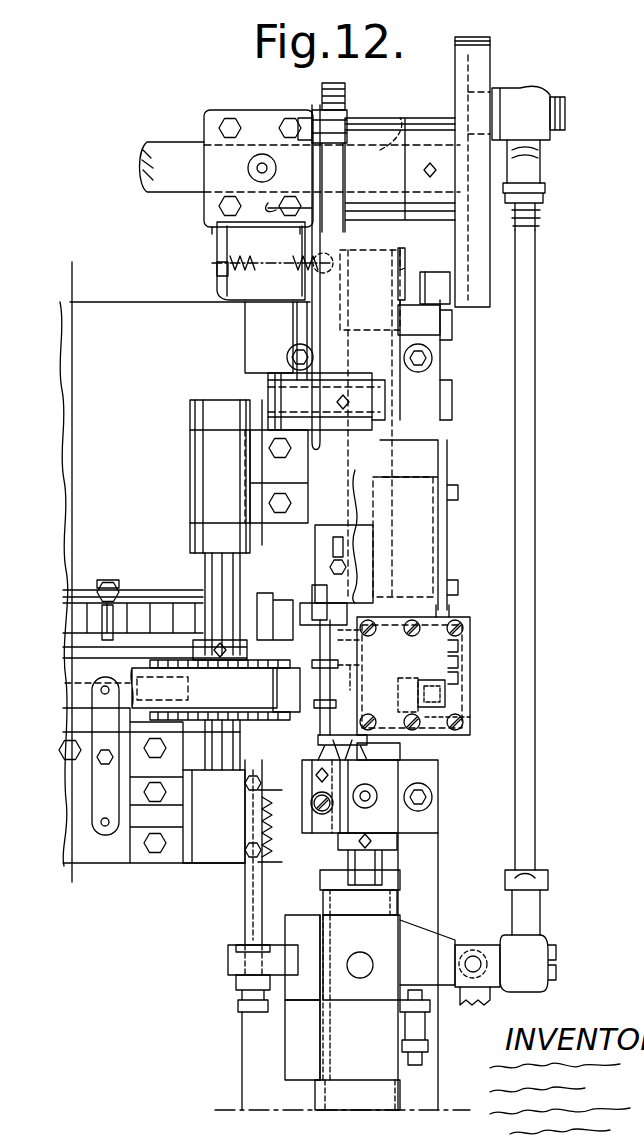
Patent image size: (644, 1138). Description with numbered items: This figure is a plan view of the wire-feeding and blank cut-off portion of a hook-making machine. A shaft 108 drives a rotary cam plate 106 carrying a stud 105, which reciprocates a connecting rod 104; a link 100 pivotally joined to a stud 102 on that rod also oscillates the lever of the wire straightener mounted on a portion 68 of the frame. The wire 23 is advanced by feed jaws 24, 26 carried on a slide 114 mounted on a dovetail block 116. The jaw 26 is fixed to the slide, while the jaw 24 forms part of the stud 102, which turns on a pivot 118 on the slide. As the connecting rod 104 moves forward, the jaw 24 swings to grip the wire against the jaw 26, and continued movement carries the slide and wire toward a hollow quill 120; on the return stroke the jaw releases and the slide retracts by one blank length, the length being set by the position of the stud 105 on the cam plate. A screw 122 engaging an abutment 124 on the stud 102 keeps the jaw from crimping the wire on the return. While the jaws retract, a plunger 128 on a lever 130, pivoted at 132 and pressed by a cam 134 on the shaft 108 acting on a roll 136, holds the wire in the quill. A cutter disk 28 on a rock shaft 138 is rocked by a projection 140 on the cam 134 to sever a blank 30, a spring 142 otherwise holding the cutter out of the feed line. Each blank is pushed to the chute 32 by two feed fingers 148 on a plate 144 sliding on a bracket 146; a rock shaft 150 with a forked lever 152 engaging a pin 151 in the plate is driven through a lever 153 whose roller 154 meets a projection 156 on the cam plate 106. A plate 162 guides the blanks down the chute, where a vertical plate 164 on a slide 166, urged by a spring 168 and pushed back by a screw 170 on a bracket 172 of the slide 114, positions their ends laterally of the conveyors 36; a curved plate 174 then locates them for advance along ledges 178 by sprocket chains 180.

The wire 23 is at (320, 1052).
The feed jaw 24 is at (328, 935).
The feed jaw 26 is at (316, 932).
The cutter disk 28 is at (378, 748).
The blanks 30 is at (257, 620).
The chute 32 is at (310, 645).
The conveyors 36 is at (266, 688).
The frame portion 68 is at (428, 854).
The link 100 is at (490, 998).
The stud 102 is at (496, 950).
The connecting rod 104 is at (520, 664).
The stud 105 is at (564, 112).
The rotary cam plate 106 is at (462, 68).
The shaft 108 is at (178, 152).
The slide 114 is at (296, 1066).
The dovetail block 116 is at (332, 1092).
The pivot 118 is at (360, 965).
The hollow quill 120 is at (320, 872).
The screw 122 is at (422, 1005).
The abutment 124 is at (400, 1002).
The plunger 128 is at (314, 802).
The lever 130 is at (328, 444).
The pivot 132 is at (262, 396).
The cam 134 is at (322, 92).
The roll 136 is at (332, 128).
The rock shaft 138 is at (368, 456).
The projection 140 is at (345, 214).
The spring 142 is at (232, 266).
The plate 144 is at (463, 660).
The bracket 146 is at (430, 626).
The feed fingers 148 is at (330, 676).
The rock shaft 150 is at (436, 352).
The pin 151 is at (450, 720).
The forked lever 152 is at (446, 696).
The lever 153 is at (450, 334).
The roller 154 is at (436, 298).
The projection 156 is at (450, 268).
The plate 162 is at (287, 633).
The vertical plate 164 is at (314, 742).
The slide 166 is at (250, 900).
The spring 168 is at (280, 852).
The screw 170 is at (240, 944).
The bracket 172 is at (228, 957).
The plate 174 is at (262, 700).
The ledges 178 is at (291, 690).
The sprocket chains 180 is at (108, 716).